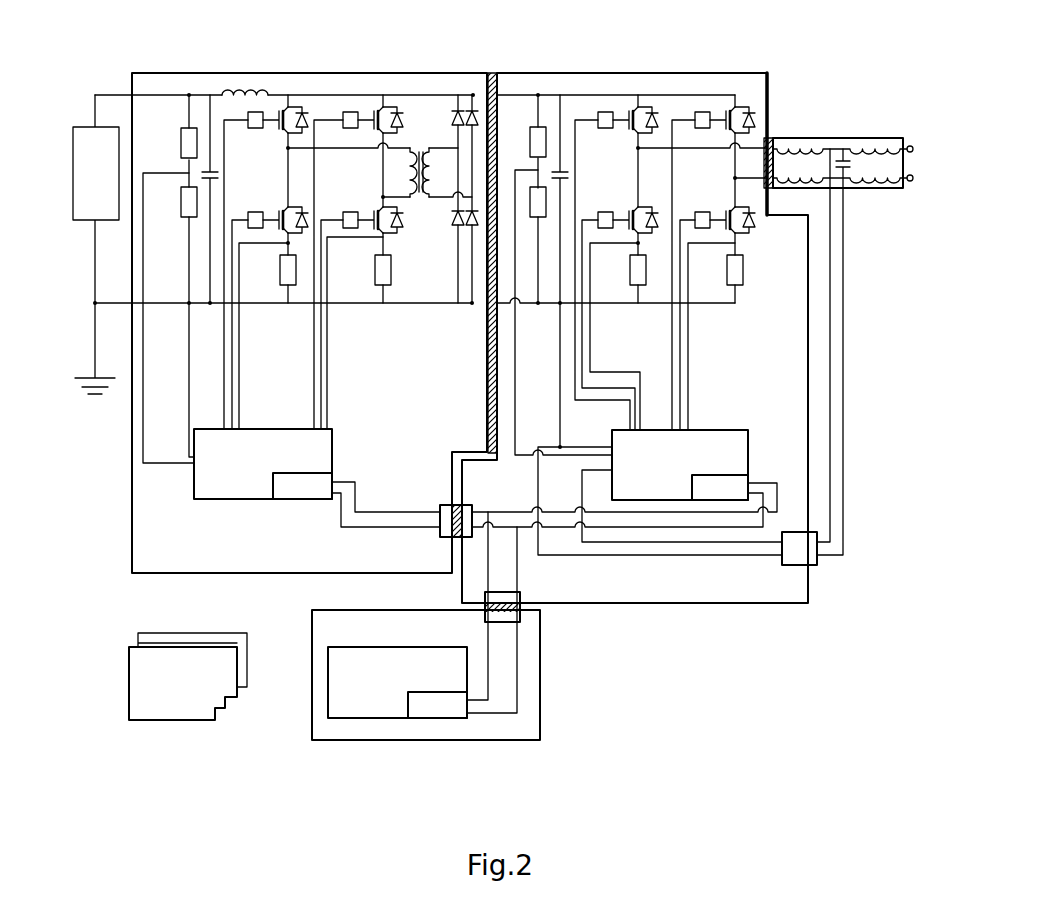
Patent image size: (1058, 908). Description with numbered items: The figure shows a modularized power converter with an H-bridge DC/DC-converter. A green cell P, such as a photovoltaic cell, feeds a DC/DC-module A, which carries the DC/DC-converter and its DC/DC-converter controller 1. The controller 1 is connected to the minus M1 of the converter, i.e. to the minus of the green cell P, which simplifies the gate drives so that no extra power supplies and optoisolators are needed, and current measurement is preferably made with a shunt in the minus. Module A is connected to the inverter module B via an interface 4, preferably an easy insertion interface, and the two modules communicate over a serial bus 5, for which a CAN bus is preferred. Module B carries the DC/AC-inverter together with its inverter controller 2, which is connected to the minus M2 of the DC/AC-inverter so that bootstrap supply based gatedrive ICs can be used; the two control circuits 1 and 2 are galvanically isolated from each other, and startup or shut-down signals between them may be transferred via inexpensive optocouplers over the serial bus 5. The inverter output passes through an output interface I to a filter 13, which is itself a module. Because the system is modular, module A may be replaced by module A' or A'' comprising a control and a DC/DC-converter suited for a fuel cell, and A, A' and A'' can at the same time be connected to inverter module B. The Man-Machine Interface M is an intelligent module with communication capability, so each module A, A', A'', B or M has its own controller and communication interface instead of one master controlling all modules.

The interface 4 is at (494, 74).
The output interface I is at (778, 137).
The filter 13 is at (872, 137).
The green cell P is at (83, 222).
The minus of the converter M1 is at (183, 301).
The minus of the DC/AC-inverter M2 is at (557, 307).
The DC/DC-module A is at (309, 346).
The module A' is at (183, 683).
The module A'' is at (192, 641).
The serial bus 5 is at (337, 513).
The DC/AC-inverter B is at (678, 605).
The Man-Machine Interface M is at (540, 680).
The DC/DC-converter controller 1 is at (251, 468).
The inverter controller 2 is at (653, 468).